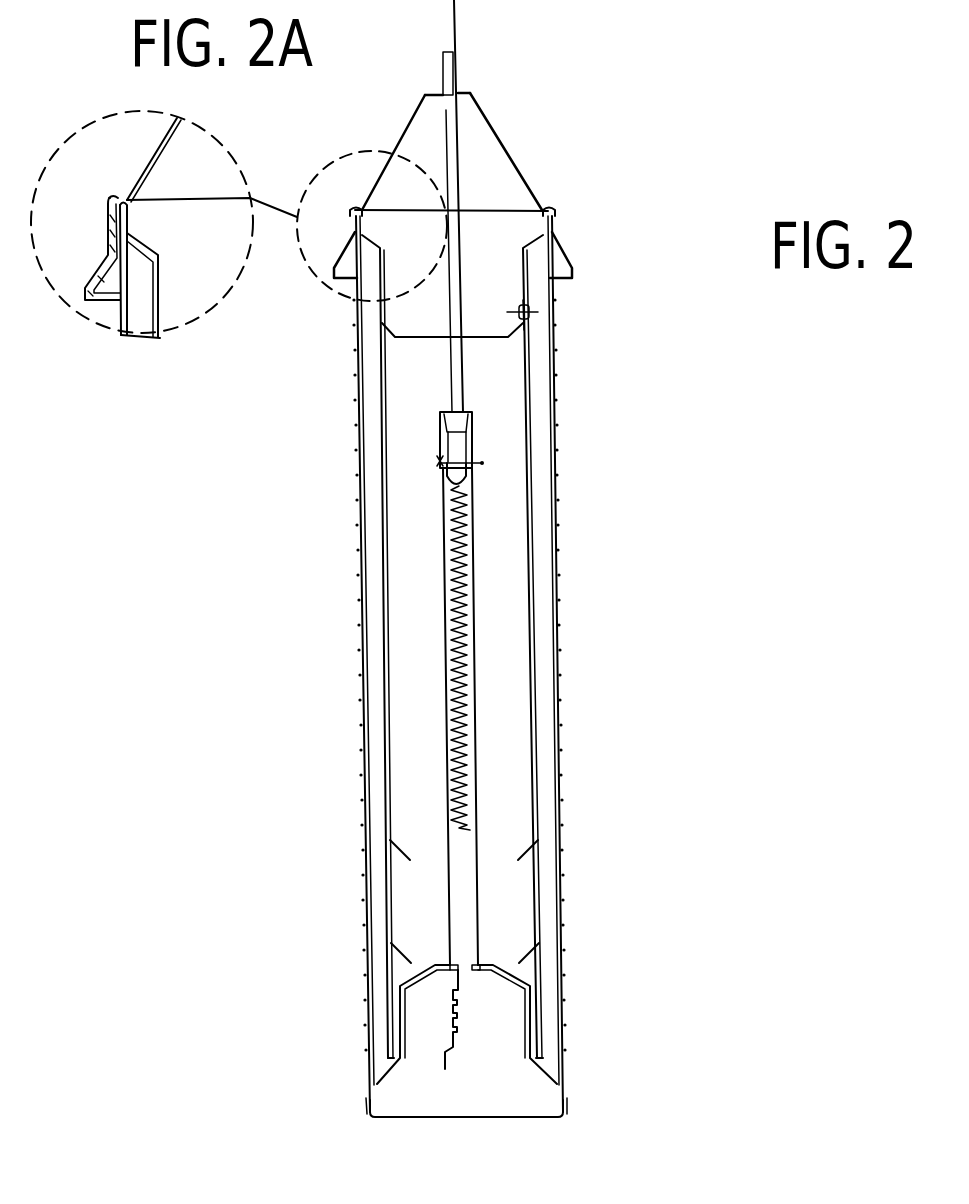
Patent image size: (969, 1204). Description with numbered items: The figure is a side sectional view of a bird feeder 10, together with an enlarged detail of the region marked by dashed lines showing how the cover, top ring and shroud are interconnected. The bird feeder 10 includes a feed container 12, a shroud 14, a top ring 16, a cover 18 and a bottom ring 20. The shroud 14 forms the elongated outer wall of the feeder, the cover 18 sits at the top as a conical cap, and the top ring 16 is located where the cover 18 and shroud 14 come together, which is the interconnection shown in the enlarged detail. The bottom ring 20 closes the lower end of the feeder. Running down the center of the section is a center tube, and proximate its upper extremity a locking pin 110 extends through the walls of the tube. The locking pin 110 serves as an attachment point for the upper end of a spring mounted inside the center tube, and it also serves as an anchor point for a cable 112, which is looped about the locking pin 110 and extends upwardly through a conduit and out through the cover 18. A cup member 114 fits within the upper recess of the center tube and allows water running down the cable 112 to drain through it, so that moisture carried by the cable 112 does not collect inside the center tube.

The bird feeder 10 is at (688, 73).
The feed container 12 is at (502, 620).
The shroud 14 is at (577, 558).
The top ring 16 is at (500, 255).
The cover 18 is at (546, 150).
The bottom ring 20 is at (505, 1108).
The locking pin 110 is at (482, 463).
The cable 112 is at (455, 25).
The cup member 114 is at (440, 420).